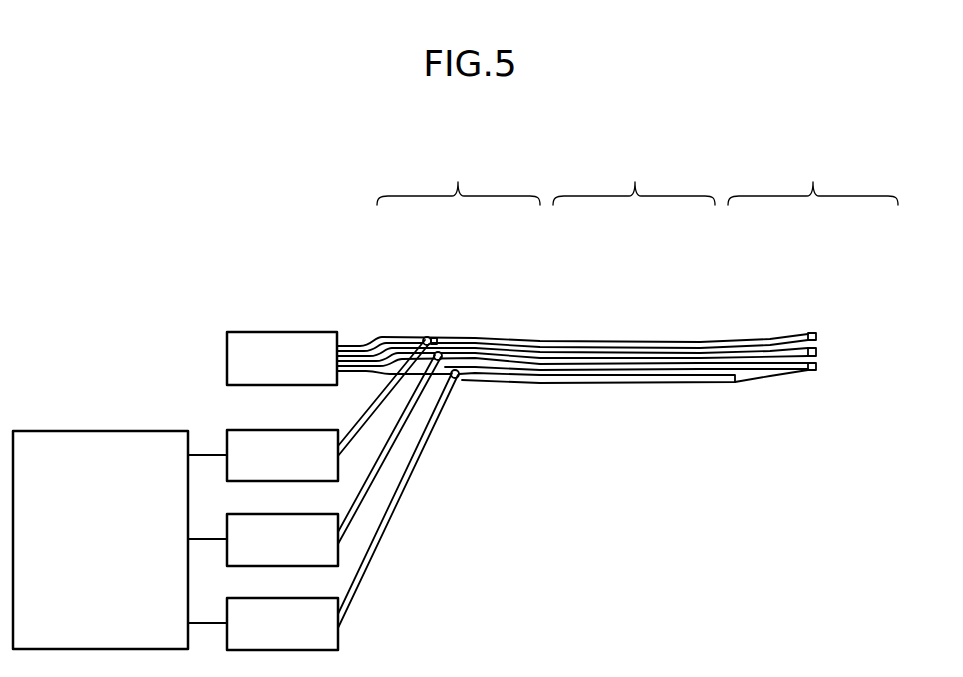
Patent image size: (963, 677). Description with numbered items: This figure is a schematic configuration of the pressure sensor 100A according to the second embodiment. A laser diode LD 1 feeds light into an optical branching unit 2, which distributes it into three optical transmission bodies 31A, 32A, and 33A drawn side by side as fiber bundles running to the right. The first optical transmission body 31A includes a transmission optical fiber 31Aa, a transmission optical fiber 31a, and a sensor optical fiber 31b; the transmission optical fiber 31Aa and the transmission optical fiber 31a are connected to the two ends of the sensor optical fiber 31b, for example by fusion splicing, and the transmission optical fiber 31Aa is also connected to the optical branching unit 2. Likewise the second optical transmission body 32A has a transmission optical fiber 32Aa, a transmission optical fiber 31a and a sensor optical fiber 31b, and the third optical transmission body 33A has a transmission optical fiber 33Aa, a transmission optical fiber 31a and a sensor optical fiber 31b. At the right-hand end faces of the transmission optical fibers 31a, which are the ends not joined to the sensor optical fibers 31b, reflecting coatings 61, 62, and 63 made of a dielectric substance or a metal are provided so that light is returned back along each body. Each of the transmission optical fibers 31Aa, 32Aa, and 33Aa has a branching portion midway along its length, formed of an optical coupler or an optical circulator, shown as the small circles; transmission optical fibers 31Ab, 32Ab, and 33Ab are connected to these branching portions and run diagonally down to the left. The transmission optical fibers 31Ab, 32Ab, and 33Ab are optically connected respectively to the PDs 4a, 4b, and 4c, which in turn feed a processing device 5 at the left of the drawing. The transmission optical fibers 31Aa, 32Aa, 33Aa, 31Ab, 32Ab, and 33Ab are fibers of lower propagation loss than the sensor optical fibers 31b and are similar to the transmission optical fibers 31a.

The laser diode 1 is at (296, 332).
The optical branching unit 2 is at (633, 370).
The PD 4a is at (296, 430).
The PD 4b is at (296, 514).
The PD 4c is at (296, 598).
The processing device 5 is at (167, 431).
The optical transmission body 31A is at (458, 180).
The optical transmission body 32A is at (634, 180).
The optical transmission body 33A is at (813, 180).
The transmission optical fiber 31Aa is at (414, 338).
The transmission optical fiber 32Aa is at (575, 345).
The transmission optical fiber 33Aa is at (724, 340).
The sensor optical fiber 31b is at (466, 340).
The transmission optical fiber 31a is at (518, 340).
The transmission optical fiber 31Ab is at (388, 396).
The transmission optical fiber 32Ab is at (408, 432).
The transmission optical fiber 33Ab is at (412, 470).
The reflecting coating 61 is at (817, 336).
The reflecting coating 62 is at (817, 352).
The reflecting coating 63 is at (817, 366).
The pressure sensor 100A is at (633, 370).